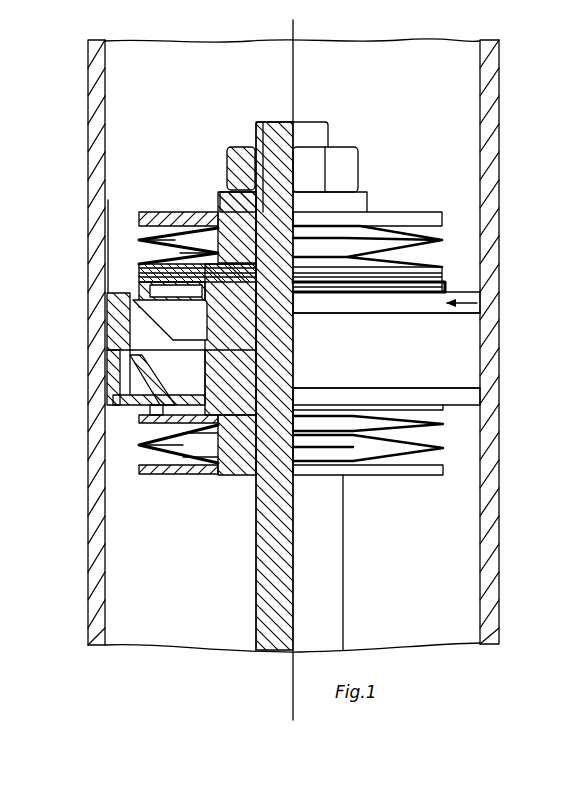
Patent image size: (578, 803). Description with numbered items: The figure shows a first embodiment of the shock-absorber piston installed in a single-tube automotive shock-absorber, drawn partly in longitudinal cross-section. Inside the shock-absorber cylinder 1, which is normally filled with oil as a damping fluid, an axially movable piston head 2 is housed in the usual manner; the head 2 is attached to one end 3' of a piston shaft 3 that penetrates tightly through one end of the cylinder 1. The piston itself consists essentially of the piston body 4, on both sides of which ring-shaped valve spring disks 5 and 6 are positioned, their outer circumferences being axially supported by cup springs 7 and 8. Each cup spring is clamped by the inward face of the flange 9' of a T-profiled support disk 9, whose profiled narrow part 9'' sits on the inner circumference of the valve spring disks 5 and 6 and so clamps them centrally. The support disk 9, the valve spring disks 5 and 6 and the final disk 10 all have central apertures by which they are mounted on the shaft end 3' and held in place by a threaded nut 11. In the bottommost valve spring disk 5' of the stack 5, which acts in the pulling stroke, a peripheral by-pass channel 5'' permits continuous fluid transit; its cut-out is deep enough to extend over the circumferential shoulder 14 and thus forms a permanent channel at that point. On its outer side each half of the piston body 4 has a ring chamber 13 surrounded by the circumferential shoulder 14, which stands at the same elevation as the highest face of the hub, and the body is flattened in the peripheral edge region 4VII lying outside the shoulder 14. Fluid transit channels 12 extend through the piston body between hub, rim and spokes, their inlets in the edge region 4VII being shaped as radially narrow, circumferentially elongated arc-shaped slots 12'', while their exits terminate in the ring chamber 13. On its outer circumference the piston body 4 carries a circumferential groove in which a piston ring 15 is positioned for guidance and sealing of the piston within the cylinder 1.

The shock-absorber cylinder 1 is at (490, 234).
The piston head 2 is at (458, 220).
The piston shaft 3 is at (393, 386).
The end of piston shaft 3' is at (406, 432).
The piston body 4 is at (480, 306).
The peripheral edge region 4VII is at (140, 412).
The valve spring disk 5 is at (413, 270).
The bottommost valve spring disk 5' is at (413, 280).
The by-pass channel 5'' is at (151, 270).
The valve spring disk 6 is at (353, 418).
The cup spring 7 is at (147, 241).
The cup spring 8 is at (147, 460).
The T-profiled support disk 9 is at (244, 351).
The flange of support disk 9' is at (151, 348).
The profiled narrow part of support disk 9'' is at (151, 444).
The final disk 10 is at (348, 202).
The threaded nut 11 is at (350, 173).
The fluid transit channel 12 is at (125, 377).
The arc-shaped slot 12'' is at (151, 339).
The ring chamber 13 is at (110, 335).
The circumferential shoulder 14 is at (108, 312).
The piston ring 15 is at (445, 370).